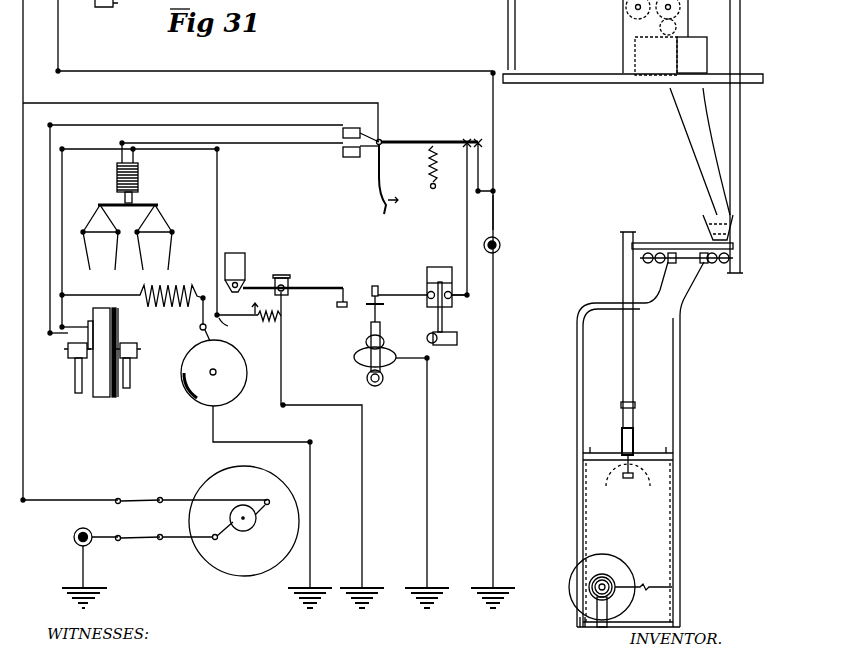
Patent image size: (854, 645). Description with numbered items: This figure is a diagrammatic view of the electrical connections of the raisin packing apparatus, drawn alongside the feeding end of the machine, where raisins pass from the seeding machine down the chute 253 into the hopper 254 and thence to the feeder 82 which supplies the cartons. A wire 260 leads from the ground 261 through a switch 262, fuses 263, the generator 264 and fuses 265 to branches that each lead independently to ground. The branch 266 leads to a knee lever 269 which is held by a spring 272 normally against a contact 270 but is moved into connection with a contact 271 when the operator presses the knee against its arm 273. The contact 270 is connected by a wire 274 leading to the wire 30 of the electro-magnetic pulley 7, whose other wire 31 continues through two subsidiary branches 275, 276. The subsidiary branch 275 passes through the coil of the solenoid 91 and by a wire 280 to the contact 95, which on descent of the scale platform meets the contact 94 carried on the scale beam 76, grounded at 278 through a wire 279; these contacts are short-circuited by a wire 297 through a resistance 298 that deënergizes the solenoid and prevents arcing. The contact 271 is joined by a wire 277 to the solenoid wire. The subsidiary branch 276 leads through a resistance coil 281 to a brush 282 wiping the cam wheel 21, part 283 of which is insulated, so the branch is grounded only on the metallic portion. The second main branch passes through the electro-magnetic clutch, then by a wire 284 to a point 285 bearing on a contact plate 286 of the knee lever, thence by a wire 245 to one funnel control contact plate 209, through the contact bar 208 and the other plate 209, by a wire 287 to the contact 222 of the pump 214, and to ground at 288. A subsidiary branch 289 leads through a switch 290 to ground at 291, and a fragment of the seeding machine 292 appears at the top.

The driving pulley 7 is at (100, 397).
The cam wheel 21 is at (210, 382).
The wire 30 is at (78, 335).
The wire 31 is at (78, 322).
The scale beam 76 is at (320, 286).
The feeder 82 is at (628, 272).
The solenoid 91 is at (140, 173).
The contact 94 is at (260, 296).
The contact 95 is at (445, 394).
The metallic bar 208 is at (456, 335).
The contact plates 209 is at (428, 290).
The pump casing 214 is at (386, 346).
The metallic bar 222 is at (370, 287).
The wire 245 is at (464, 212).
The chute 253 is at (708, 118).
The hopper 254 is at (700, 222).
The wire 260 is at (85, 563).
The ground 261 is at (100, 595).
The switch 262 is at (75, 540).
The fuses 263 is at (133, 537).
The generator 264 is at (244, 521).
The fuses 265 is at (130, 500).
The branch 266 is at (128, 103).
The knee lever 269 is at (428, 131).
The contact 270 is at (348, 127).
The contact 271 is at (348, 162).
The spring 272 is at (428, 174).
The arm 273 is at (378, 182).
The conductor 274 is at (148, 125).
The subsidiary branch 275 is at (107, 149).
The subsidiary branch 276 is at (82, 297).
The wire 277 is at (213, 143).
The ground 278 is at (373, 600).
The wire 279 is at (287, 336).
The wire 280 is at (218, 200).
The resistance coil 281 is at (180, 307).
The brush 282 is at (200, 338).
The insulated part 283 is at (230, 403).
The wire 284 is at (147, 71).
The point 285 is at (480, 155).
The contact plate 286 is at (480, 142).
The wire 287 is at (412, 293).
The ground 288 is at (437, 600).
The subsidiary branch 289 is at (495, 212).
The switch 290 is at (498, 250).
The ground 291 is at (497, 600).
The bracket 292 is at (603, 1).
The wire 297 is at (260, 320).
The resistance 298 is at (283, 318).